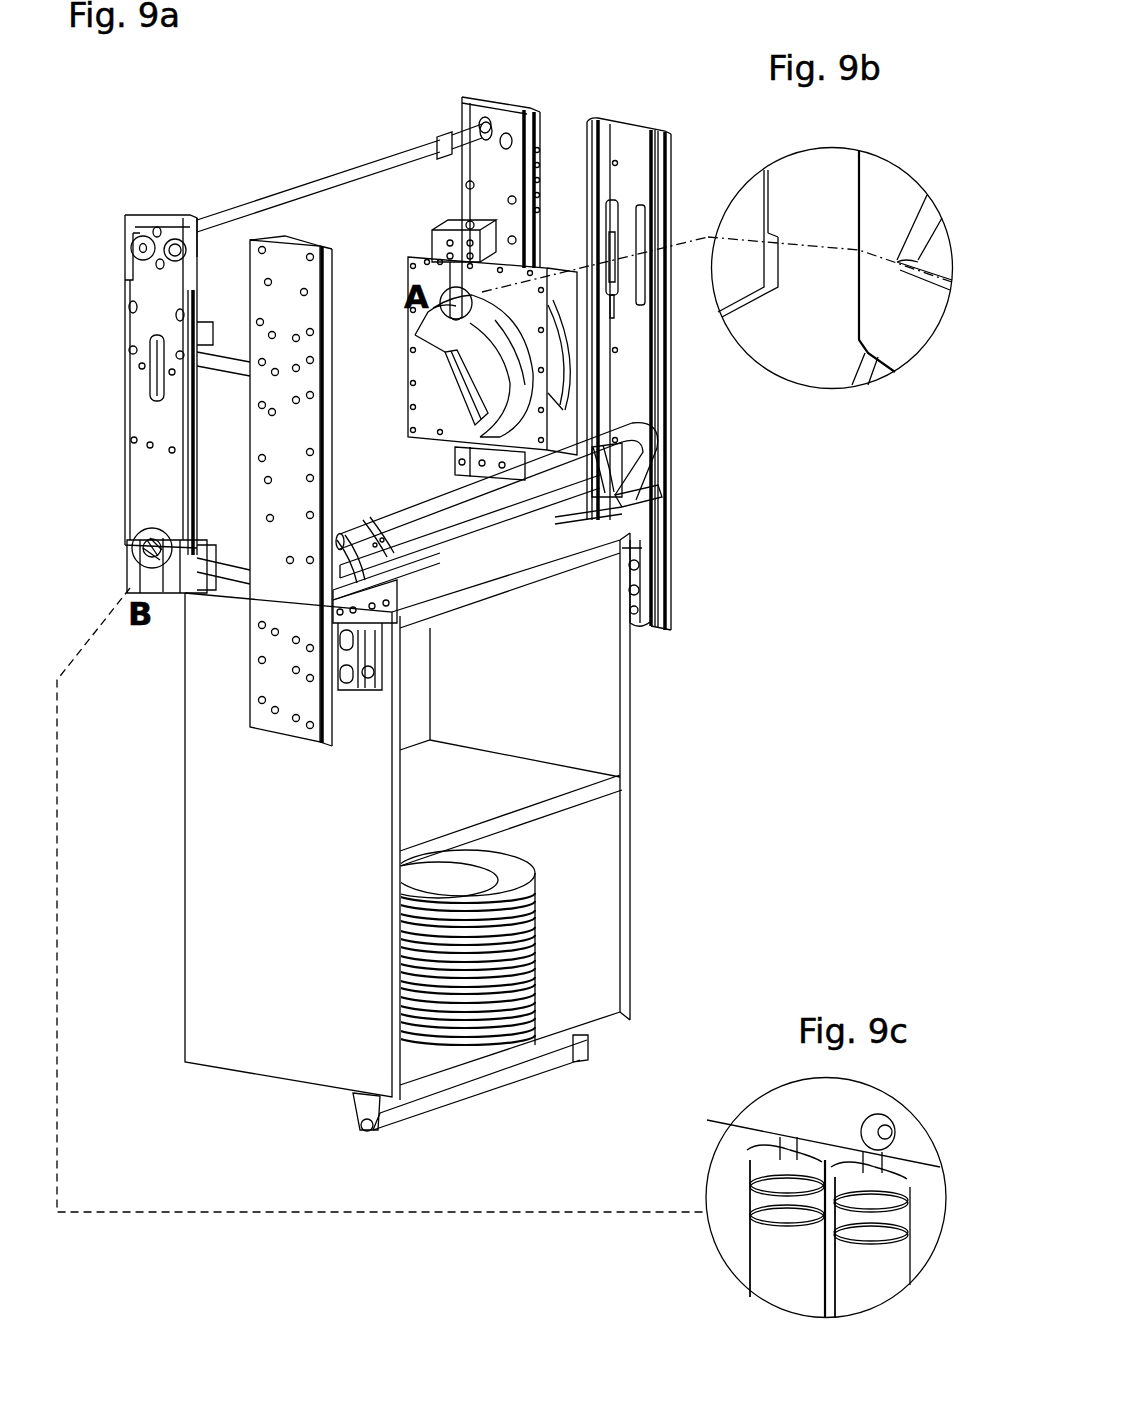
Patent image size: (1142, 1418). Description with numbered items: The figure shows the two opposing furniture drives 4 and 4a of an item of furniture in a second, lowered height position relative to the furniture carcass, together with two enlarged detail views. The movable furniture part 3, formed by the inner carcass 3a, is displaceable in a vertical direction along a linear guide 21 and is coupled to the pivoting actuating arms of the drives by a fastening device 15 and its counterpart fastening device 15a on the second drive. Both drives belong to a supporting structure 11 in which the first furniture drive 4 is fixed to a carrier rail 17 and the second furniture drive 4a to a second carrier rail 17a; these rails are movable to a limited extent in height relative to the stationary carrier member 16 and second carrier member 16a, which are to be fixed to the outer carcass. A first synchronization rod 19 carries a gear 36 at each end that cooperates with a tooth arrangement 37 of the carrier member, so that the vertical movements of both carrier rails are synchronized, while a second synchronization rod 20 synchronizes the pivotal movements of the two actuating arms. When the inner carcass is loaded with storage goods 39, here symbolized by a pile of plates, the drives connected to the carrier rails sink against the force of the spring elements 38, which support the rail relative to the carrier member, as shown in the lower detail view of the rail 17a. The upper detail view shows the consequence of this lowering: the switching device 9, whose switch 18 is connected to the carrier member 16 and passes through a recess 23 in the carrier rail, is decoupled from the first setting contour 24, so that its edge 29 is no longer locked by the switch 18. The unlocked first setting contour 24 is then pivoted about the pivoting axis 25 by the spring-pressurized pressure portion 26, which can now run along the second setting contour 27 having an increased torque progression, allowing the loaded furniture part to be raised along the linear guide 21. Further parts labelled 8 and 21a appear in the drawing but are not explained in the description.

In FIG. 9A, the movable furniture part 3 is at (511, 809).
In FIG. 9A, the inner carcass 3a is at (250, 1050).
In FIG. 9A, the furniture drive 4 is at (405, 228).
In FIG. 9A, the second furniture drive 4a is at (205, 468).
In FIG. 9A, the base plate 8 is at (488, 1090).
In FIG. 9A, the switching device 9 is at (458, 228).
In FIG. 9C, the switching device 9 is at (837, 1143).
In FIG. 9A, the supporting structure 11 is at (589, 49).
In FIG. 9A, the fastening device 15 is at (645, 648).
In FIG. 9A, the fastening device 15a is at (363, 700).
In FIG. 9A, the carrier member 16 is at (500, 100).
In FIG. 9A, the second carrier member 16a is at (140, 550).
In FIG. 9C, the second carrier member 16a is at (720, 1192).
In FIG. 9A, the carrier rail 17 is at (480, 113).
In FIG. 9A, the second carrier rail 17a is at (145, 410).
In FIG. 9C, the second carrier rail 17a is at (750, 1117).
In FIG. 9B, the switch 18 is at (792, 177).
In FIG. 9A, the first synchronization rod 19 is at (283, 200).
In FIG. 9A, the second synchronization rod 20 is at (460, 498).
In FIG. 9A, the linear guide 21 is at (600, 118).
In FIG. 9A, the mounting plate 21a is at (262, 692).
In FIG. 9A, the recess 23 is at (145, 352).
In FIG. 9B, the first setting contour 24 is at (898, 347).
In FIG. 9A, the pivoting axis 25 is at (455, 454).
In FIG. 9A, the pressure portion 26 is at (657, 467).
In FIG. 9A, the second setting contour 27 is at (452, 352).
In FIG. 9B, the edge 29 is at (859, 253).
In FIG. 9A, the gear 36 is at (146, 236).
In FIG. 9A, the tooth arrangement 37 is at (130, 252).
In FIG. 9A, the spring element 38 is at (140, 574).
In FIG. 9C, the spring element 38 is at (743, 1223).
In FIG. 9A, the storage goods 39 is at (512, 953).